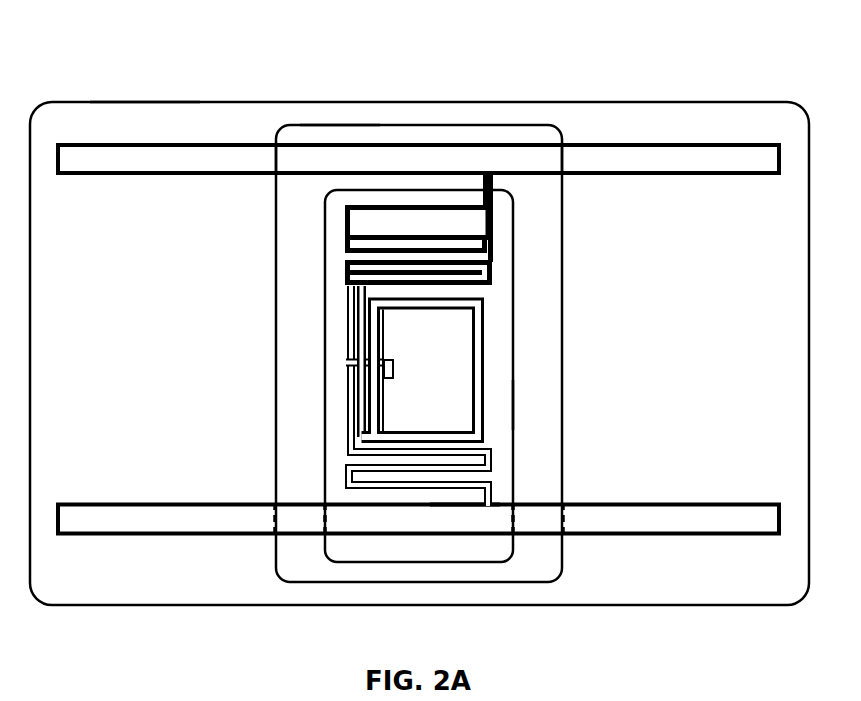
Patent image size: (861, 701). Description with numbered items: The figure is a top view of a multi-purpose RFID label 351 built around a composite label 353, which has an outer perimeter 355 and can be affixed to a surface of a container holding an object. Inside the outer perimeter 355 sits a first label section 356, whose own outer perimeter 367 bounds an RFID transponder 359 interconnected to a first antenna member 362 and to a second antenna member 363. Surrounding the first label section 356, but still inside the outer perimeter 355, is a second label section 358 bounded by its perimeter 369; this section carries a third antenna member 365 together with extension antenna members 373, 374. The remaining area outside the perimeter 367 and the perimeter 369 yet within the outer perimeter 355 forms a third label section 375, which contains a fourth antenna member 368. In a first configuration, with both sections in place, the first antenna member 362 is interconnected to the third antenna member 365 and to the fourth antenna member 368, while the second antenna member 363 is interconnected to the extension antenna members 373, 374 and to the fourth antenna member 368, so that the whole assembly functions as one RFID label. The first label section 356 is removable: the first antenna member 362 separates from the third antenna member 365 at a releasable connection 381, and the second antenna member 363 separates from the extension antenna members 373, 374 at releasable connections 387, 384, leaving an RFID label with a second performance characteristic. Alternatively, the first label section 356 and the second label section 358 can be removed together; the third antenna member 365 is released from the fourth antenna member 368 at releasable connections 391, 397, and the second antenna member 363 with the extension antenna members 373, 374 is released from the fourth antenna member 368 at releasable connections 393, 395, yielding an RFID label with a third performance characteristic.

The multi-purpose RFID label 351 is at (331, 54).
The composite label 353 is at (597, 91).
The outer perimeter 355 is at (135, 99).
The first label section 356 is at (498, 366).
The second label section 358 is at (538, 405).
The RFID transponder 359 is at (394, 370).
The first antenna member 362 is at (382, 219).
The second antenna member 363 is at (463, 518).
The third antenna member 365 is at (425, 162).
The outer perimeter of first label section 367 is at (468, 187).
The fourth antenna member 368 is at (418, 339).
The perimeter of second label section 369 is at (340, 123).
The extension antenna member 373 is at (295, 520).
The extension antenna member 374 is at (535, 520).
The third label section 375 is at (378, 348).
The releasable connection 381 is at (495, 195).
The releasable connection 384 is at (515, 522).
The releasable connection 387 is at (324, 521).
The releasable connection 391 is at (566, 165).
The releasable connection 393 is at (568, 522).
The releasable connection 395 is at (270, 522).
The releasable connection 397 is at (271, 163).